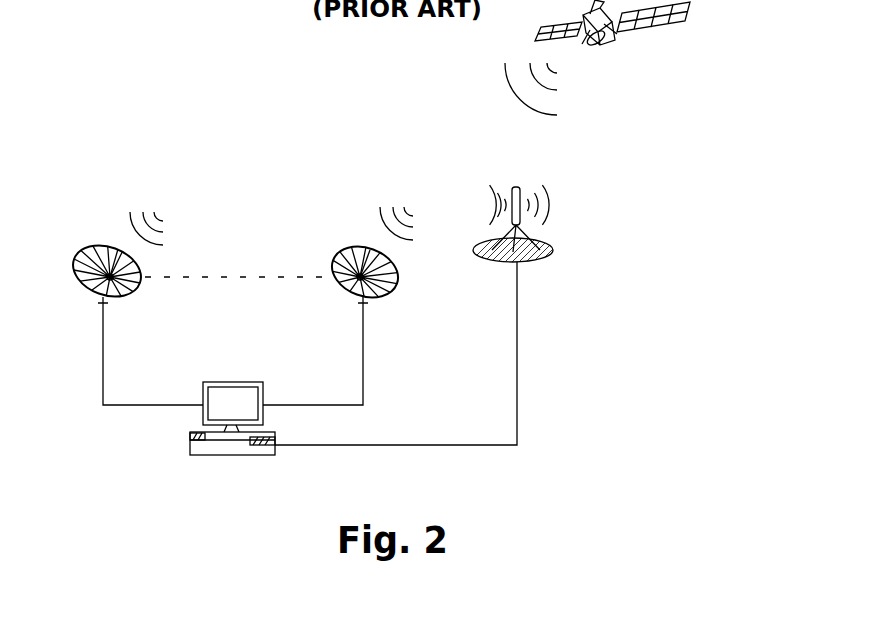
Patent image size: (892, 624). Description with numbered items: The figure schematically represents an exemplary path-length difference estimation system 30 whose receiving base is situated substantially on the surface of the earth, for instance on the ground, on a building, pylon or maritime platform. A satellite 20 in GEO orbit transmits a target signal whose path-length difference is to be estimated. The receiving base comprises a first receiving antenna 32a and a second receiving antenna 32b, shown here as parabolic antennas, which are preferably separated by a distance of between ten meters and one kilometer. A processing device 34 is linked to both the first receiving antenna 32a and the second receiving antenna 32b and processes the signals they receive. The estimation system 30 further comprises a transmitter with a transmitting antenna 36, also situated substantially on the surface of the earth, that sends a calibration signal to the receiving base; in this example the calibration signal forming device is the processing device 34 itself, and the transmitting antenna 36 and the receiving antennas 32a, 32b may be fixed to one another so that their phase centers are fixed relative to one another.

The satellite 20 is at (597, 57).
The path-length difference estimation system 30 is at (607, 222).
The first receiving antenna 32a is at (76, 277).
The second receiving antenna 32b is at (397, 292).
The processing device 34 is at (235, 456).
The transmitting antenna 36 is at (548, 253).